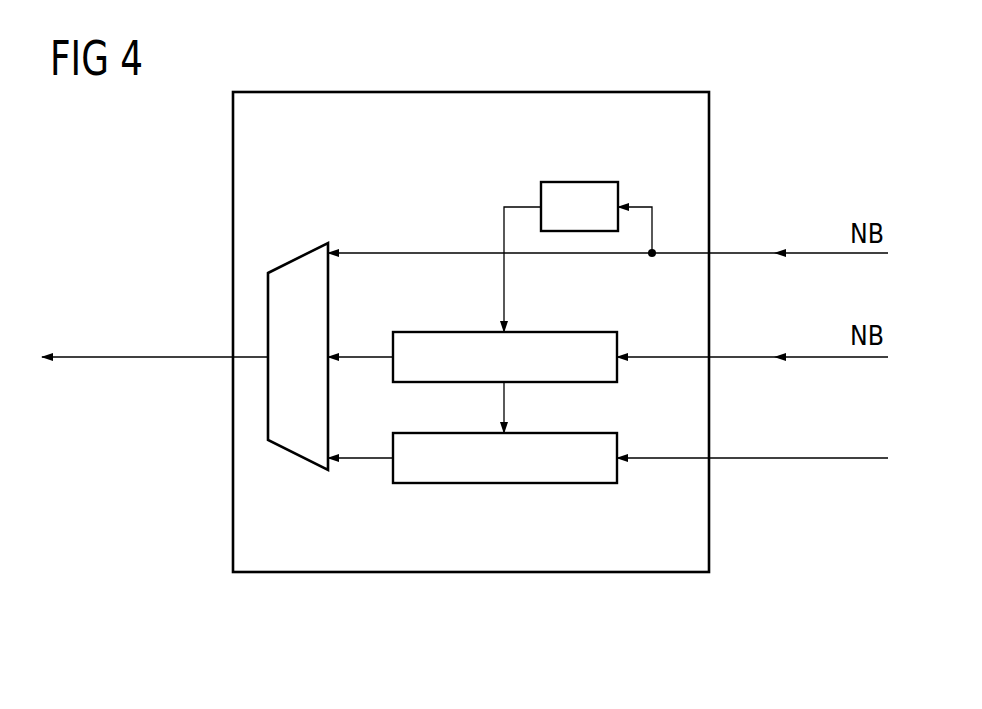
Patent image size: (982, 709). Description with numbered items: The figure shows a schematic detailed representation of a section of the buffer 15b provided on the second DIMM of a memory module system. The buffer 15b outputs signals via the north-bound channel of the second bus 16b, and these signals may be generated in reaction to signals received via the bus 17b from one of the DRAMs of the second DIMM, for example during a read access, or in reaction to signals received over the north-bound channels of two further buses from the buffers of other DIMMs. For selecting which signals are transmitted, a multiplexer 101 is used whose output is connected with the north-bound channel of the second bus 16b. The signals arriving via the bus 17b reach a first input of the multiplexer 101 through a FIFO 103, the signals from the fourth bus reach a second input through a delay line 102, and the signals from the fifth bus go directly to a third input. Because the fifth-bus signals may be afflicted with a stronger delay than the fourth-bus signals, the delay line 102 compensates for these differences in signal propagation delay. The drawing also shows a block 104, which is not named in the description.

The buffer 15b is at (218, 593).
The second bus 16b is at (163, 345).
The bus 17b is at (807, 482).
The multiplexer 101 is at (293, 455).
The delay line 102 is at (558, 330).
The FIFO 103 is at (505, 485).
The PLL 104 is at (580, 180).